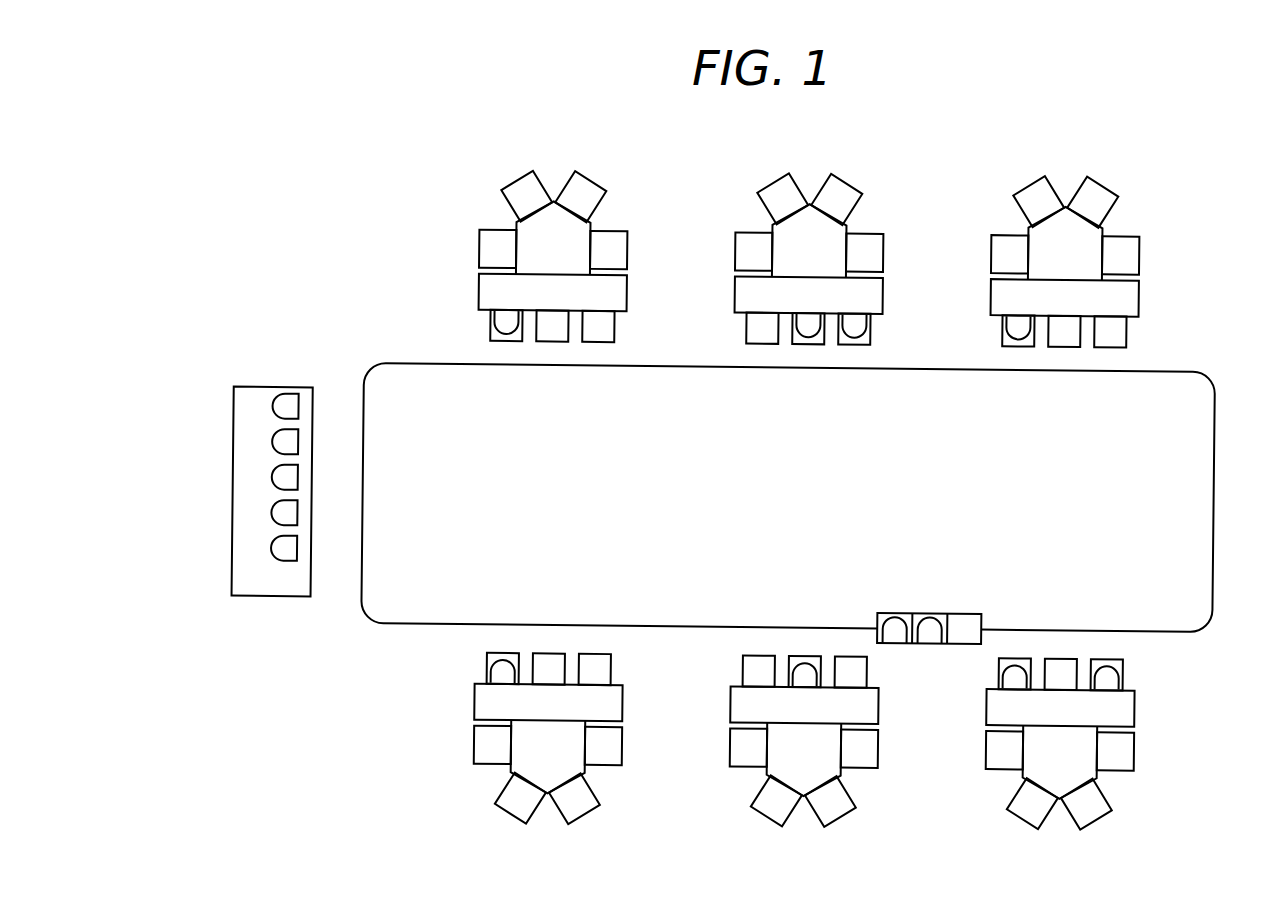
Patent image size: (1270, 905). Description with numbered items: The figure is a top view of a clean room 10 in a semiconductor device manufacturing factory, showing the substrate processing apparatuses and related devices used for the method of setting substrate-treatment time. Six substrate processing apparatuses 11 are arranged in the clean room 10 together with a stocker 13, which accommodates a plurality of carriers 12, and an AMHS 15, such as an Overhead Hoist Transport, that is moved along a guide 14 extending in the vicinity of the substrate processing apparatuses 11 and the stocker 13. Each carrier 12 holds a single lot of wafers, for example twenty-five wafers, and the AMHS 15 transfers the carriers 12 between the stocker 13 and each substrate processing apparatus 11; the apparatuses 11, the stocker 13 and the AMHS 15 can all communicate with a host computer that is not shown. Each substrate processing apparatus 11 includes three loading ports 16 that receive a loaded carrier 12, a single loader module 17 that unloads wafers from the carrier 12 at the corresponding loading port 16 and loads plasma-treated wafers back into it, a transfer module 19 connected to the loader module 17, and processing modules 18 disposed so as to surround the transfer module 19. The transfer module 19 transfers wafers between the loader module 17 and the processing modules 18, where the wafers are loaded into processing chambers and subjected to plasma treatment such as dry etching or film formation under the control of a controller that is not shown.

The clean room 10 is at (766, 144).
The substrate processing apparatus 11 is at (798, 496).
The carrier 12 is at (496, 322).
The stocker 13 is at (275, 386).
The guide 14 is at (1211, 369).
The AMHS 15 is at (970, 607).
The loading port 16 is at (1130, 674).
The loader module 17 is at (1085, 708).
The processing module 18 is at (1140, 751).
The transfer module 19 is at (1108, 799).